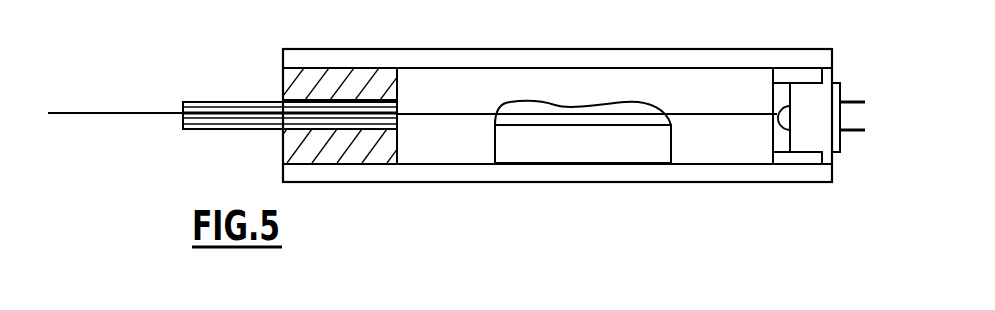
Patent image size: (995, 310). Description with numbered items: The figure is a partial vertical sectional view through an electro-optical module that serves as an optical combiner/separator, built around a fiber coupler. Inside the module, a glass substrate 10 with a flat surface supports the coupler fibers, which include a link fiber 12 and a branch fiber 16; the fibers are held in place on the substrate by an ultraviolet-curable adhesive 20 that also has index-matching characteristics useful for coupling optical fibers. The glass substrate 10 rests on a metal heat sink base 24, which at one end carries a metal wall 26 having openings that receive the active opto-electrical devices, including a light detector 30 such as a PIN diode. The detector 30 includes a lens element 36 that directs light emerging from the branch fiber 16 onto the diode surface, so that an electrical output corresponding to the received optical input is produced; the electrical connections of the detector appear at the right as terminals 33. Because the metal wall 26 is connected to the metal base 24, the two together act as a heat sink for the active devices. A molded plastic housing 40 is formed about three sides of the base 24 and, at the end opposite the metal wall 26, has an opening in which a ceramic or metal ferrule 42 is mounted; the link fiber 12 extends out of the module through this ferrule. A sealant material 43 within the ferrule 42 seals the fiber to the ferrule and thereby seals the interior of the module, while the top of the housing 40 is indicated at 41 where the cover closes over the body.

The glass substrate 10 is at (495, 140).
The link fiber 12 is at (118, 112).
The branch fiber 16 is at (737, 113).
The ultraviolet-curable adhesive 20 is at (530, 99).
The metal heat sink base 24 is at (578, 183).
The metal wall 26 is at (810, 75).
The light detector 30 is at (822, 139).
The leads 33 is at (866, 100).
The lens element 36 is at (777, 120).
The molded plastic housing 40 is at (282, 99).
The housing top wall 41 is at (358, 48).
The ferrule 42 is at (232, 101).
The sealant material 43 is at (307, 132).